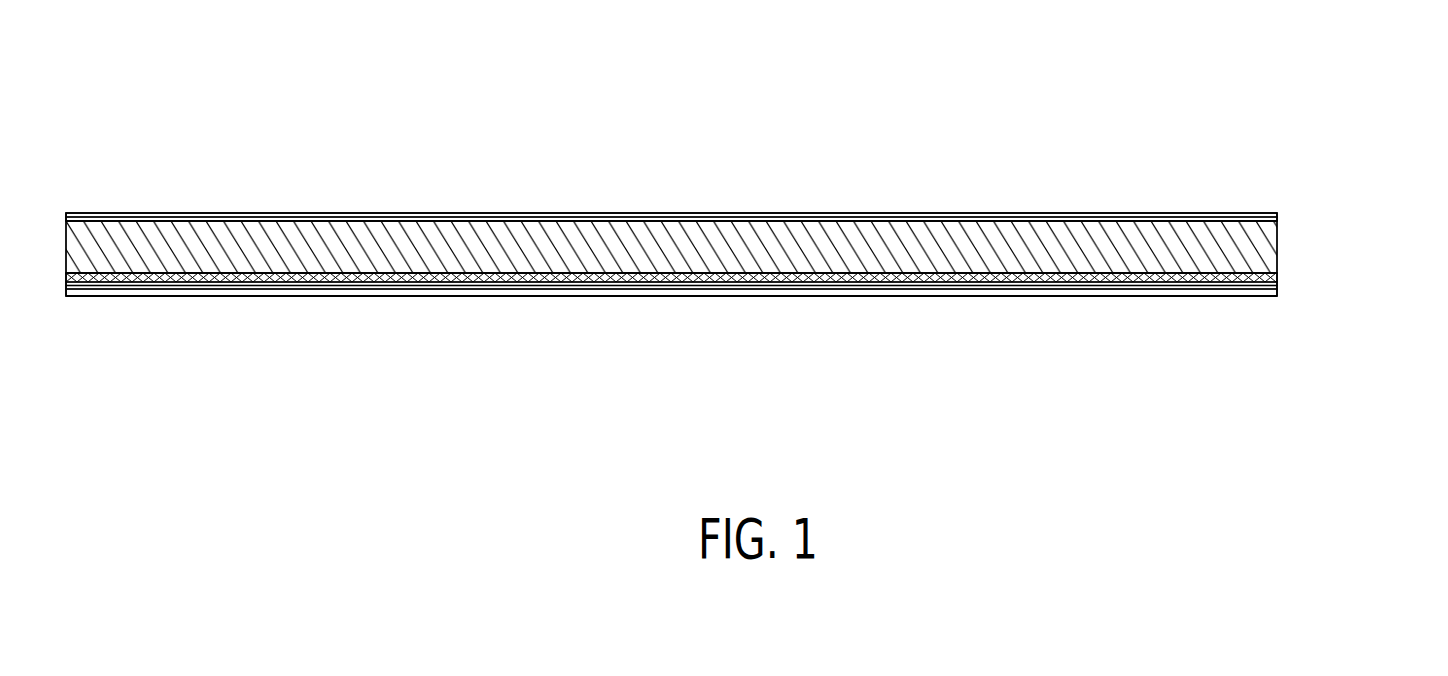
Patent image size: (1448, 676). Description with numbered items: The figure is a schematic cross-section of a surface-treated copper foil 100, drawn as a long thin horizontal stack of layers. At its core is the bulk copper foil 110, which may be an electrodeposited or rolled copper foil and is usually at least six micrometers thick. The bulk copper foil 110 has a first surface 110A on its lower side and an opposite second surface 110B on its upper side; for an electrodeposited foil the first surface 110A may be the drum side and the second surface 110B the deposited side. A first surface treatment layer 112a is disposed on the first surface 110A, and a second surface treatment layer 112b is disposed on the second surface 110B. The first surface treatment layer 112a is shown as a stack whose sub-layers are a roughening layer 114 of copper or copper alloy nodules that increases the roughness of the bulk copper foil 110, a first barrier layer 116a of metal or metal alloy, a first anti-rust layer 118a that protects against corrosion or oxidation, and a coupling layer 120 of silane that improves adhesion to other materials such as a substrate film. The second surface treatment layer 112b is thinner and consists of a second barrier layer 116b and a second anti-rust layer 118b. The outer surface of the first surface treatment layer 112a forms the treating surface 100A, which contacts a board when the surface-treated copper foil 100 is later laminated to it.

The surface-treated copper foil 100 is at (398, 140).
The treating surface 100A is at (253, 297).
The bulk copper foil 110 is at (1260, 250).
The first surface 110A is at (748, 274).
The second surface 110B is at (748, 220).
The first surface treatment layer 112a is at (1362, 382).
The second surface treatment layer 112b is at (1362, 157).
The roughening layer 114 is at (1277, 275).
The first barrier layer 116a is at (1277, 284).
The second barrier layer 116b is at (1277, 219).
The first anti-rust layer 118a is at (1277, 288).
The second anti-rust layer 118b is at (1260, 213).
The coupling layer 120 is at (1270, 297).